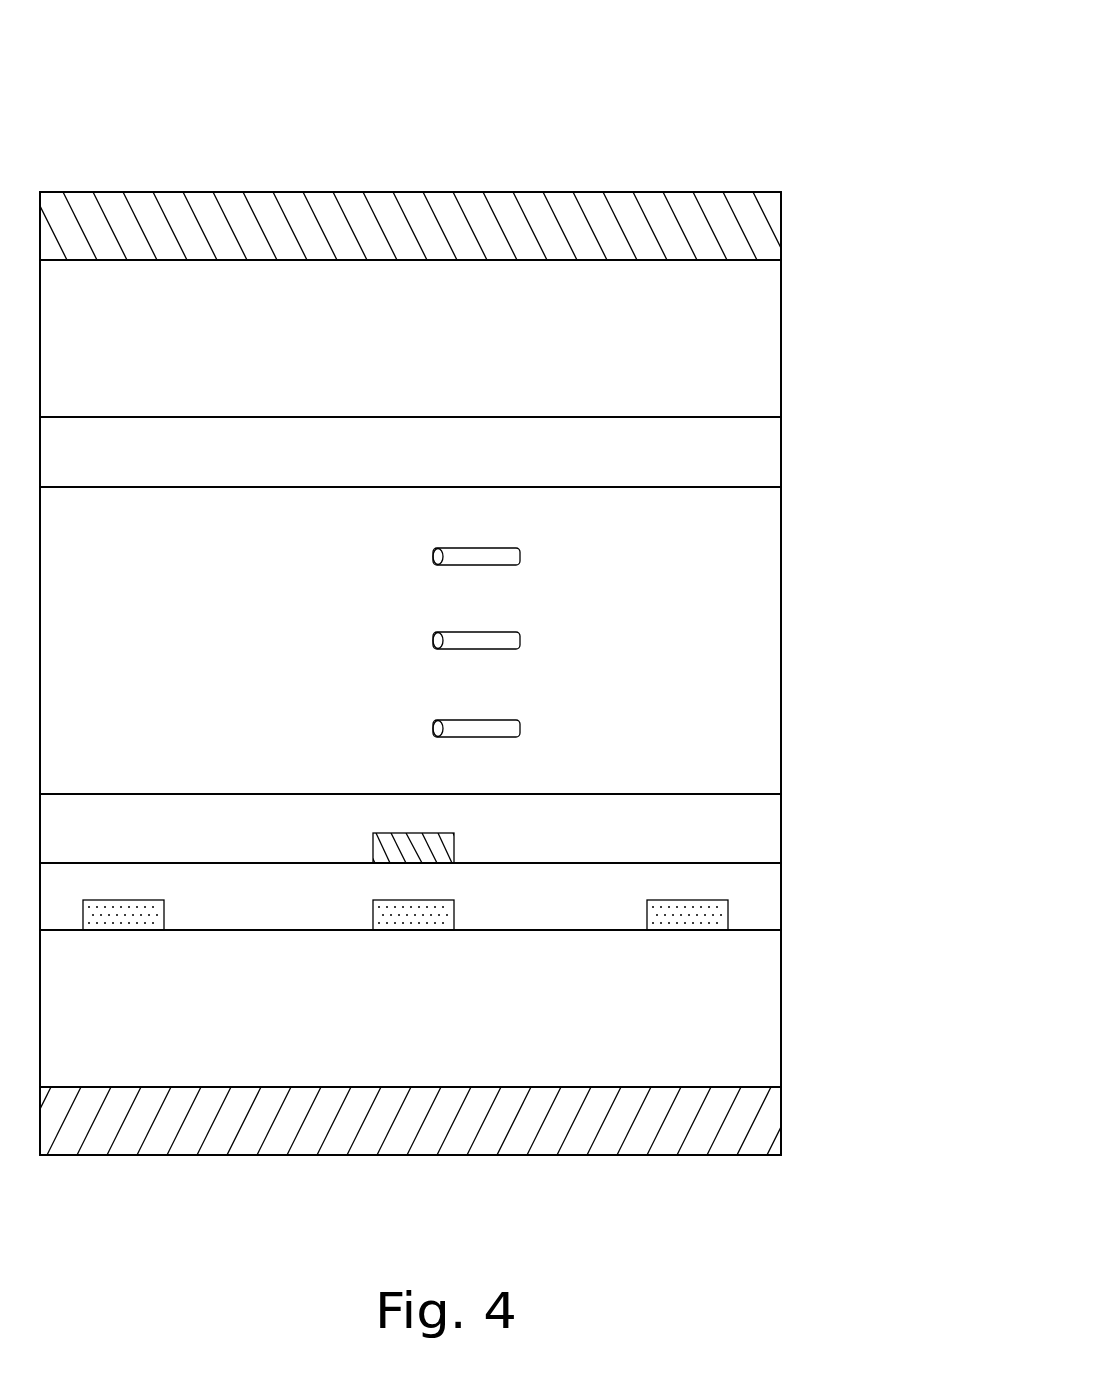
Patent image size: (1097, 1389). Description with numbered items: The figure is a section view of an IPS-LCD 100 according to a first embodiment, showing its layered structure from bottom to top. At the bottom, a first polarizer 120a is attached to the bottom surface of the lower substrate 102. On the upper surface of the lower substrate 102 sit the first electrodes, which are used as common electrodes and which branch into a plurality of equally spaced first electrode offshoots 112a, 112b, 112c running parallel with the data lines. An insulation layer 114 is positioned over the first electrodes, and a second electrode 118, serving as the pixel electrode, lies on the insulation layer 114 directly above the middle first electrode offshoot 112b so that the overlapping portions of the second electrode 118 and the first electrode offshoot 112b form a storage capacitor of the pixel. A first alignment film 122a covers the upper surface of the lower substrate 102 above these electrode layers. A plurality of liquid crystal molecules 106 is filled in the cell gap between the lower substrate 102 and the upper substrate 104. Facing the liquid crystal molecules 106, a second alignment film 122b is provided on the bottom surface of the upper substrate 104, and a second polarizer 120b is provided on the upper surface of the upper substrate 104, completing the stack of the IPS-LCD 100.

The IPS-LCD 100 is at (619, 99).
The lower substrate 102 is at (753, 1027).
The upper substrate 104 is at (753, 357).
The liquid crystal molecules 106 is at (522, 562).
The first electrode offshoot 112a is at (118, 920).
The first electrode offshoot 112b is at (408, 920).
The first electrode offshoot 112c is at (693, 922).
The insulation layer 114 is at (753, 911).
The second electrode 118 is at (385, 847).
The first polarizer 120a is at (753, 1130).
The second polarizer 120b is at (753, 243).
The first alignment film 122a is at (753, 836).
The second alignment film 122b is at (743, 456).